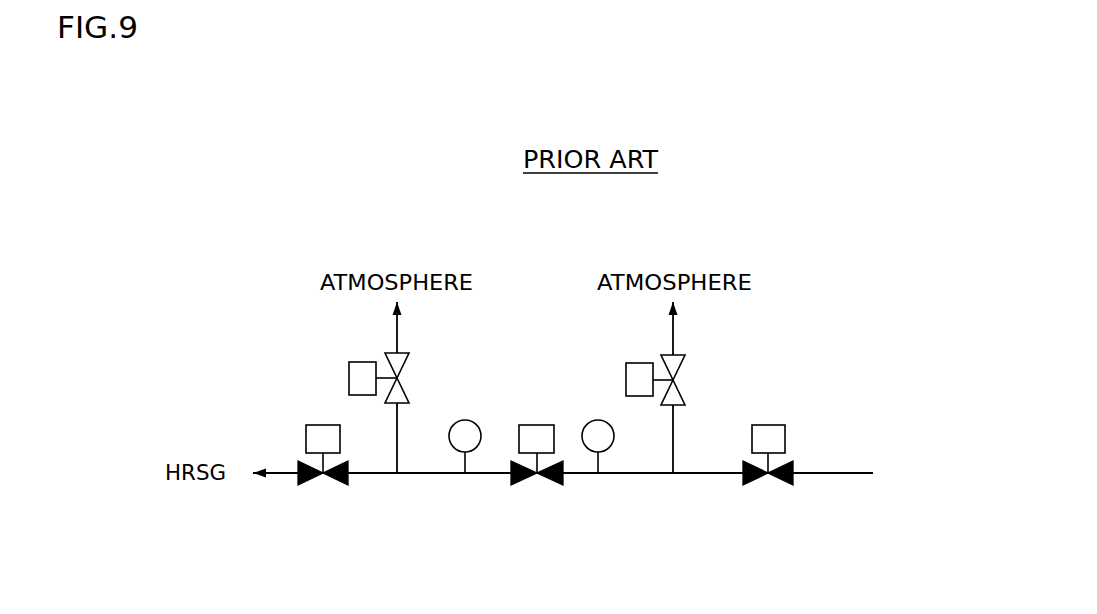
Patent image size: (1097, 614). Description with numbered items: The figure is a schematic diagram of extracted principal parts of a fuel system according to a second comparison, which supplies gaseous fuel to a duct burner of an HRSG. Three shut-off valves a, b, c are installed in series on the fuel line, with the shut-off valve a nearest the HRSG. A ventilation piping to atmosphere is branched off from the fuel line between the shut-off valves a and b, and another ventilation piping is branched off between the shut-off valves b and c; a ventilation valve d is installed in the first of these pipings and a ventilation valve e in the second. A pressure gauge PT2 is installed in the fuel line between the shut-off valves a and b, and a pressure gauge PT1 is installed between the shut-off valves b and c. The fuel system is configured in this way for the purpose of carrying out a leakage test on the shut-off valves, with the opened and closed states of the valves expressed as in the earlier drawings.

The shut-off valve a is at (323, 469).
The shut-off valve b is at (537, 469).
The shut-off valve c is at (768, 469).
The ventilation valve d is at (388, 378).
The ventilation valve e is at (663, 380).
The pressure gauge PT1 is at (598, 446).
The pressure gauge PT2 is at (465, 446).